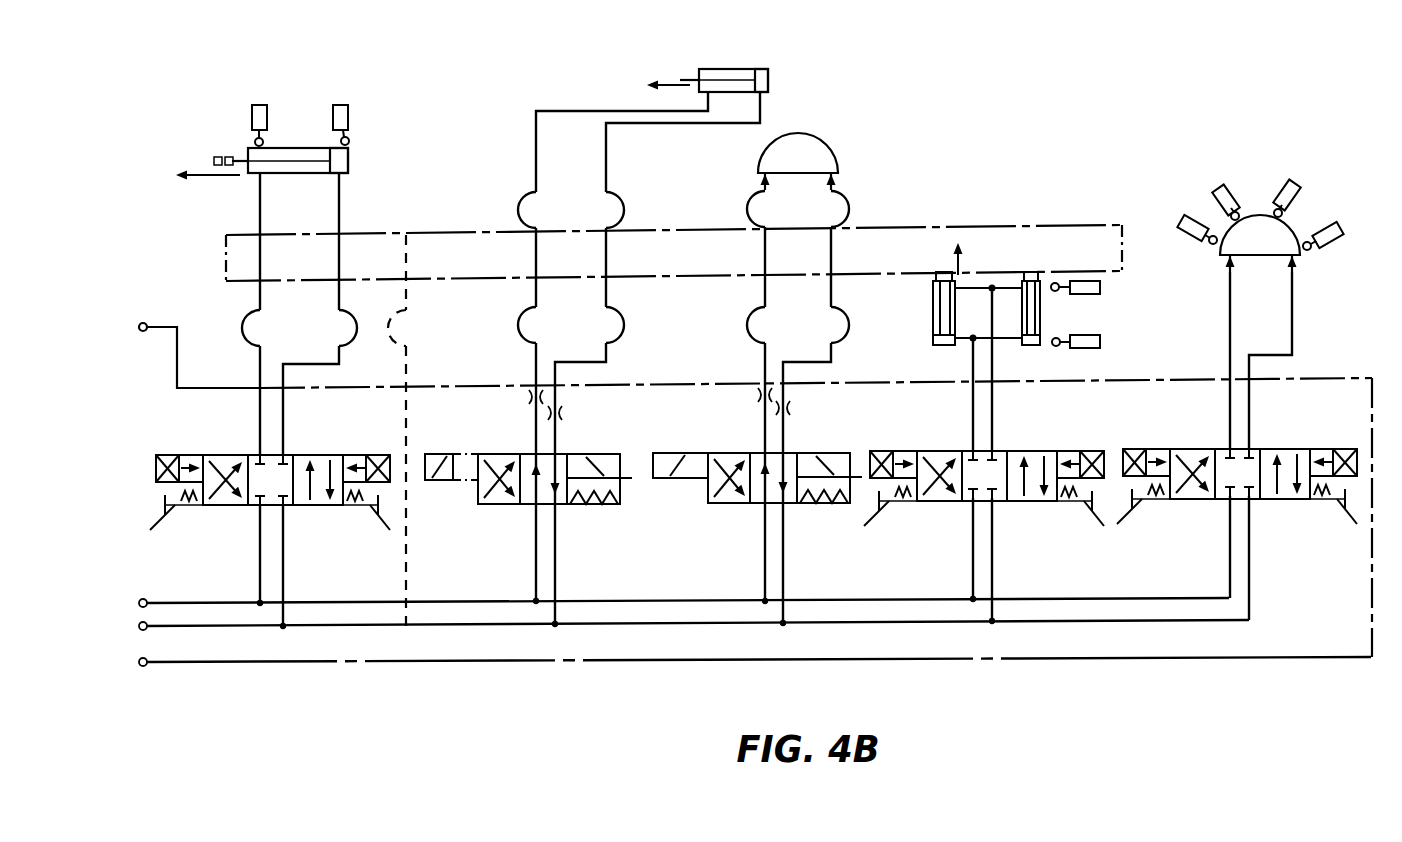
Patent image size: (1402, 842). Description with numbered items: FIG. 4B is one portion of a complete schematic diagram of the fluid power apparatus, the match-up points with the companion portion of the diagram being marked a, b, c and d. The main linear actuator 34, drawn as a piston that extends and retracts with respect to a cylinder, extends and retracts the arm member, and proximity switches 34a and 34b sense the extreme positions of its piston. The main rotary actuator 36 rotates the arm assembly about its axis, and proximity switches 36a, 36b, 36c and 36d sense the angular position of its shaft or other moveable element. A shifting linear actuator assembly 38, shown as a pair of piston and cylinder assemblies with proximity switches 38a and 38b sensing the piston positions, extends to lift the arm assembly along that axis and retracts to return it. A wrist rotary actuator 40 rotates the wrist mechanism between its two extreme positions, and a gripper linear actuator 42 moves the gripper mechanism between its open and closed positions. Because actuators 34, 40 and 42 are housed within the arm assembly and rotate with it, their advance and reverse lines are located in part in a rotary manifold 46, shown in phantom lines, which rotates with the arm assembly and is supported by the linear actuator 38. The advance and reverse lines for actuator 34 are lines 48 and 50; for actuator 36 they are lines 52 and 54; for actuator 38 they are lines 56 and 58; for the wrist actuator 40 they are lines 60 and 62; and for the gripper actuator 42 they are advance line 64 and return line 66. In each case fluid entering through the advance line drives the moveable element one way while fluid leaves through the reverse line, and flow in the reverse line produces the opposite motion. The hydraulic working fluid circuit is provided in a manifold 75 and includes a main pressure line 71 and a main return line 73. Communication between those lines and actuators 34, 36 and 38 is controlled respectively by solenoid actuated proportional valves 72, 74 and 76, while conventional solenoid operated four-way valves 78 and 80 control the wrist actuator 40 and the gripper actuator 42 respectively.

The main linear actuator 34 is at (298, 147).
The proximity switch 34a is at (258, 104).
The proximity switch 34b is at (348, 101).
The main rotary actuator 36 is at (1217, 255).
The proximity switch 36a is at (1181, 214).
The proximity switch 36b is at (1222, 186).
The proximity switch 36c is at (1290, 180).
The proximity switch 36d is at (1338, 226).
The shifting linear actuator assembly 38 is at (934, 310).
The proximity switch 38a is at (1086, 295).
The proximity switch 38b is at (1090, 346).
The wrist rotary actuator 40 is at (842, 165).
The gripper linear actuator 42 is at (746, 69).
The rotary manifold 46 is at (1060, 224).
The advance line 48 is at (343, 215).
The reverse line 50 is at (262, 216).
The advance line 52 is at (1295, 323).
The reverse line 54 is at (1226, 345).
The advance line 56 is at (972, 402).
The reverse line 58 is at (994, 411).
The advance line 60 is at (785, 428).
The reverse line 62 is at (762, 428).
The advance line 64 is at (560, 432).
The return line 66 is at (533, 428).
The main pressure line 71 is at (476, 572).
The solenoid actuated proportional valve 72 is at (218, 455).
The main return line 73 is at (471, 628).
The solenoid actuated proportional valve 74 is at (1185, 449).
The manifold 75 is at (483, 665).
The solenoid actuated proportional valve 76 is at (1060, 450).
The solenoid operated four-way valve 78 is at (720, 500).
The solenoid operated four-way valve 80 is at (503, 505).
The match-up point a is at (146, 323).
The match-up point b is at (148, 600).
The match-up point c is at (148, 625).
The match-up point d is at (148, 660).